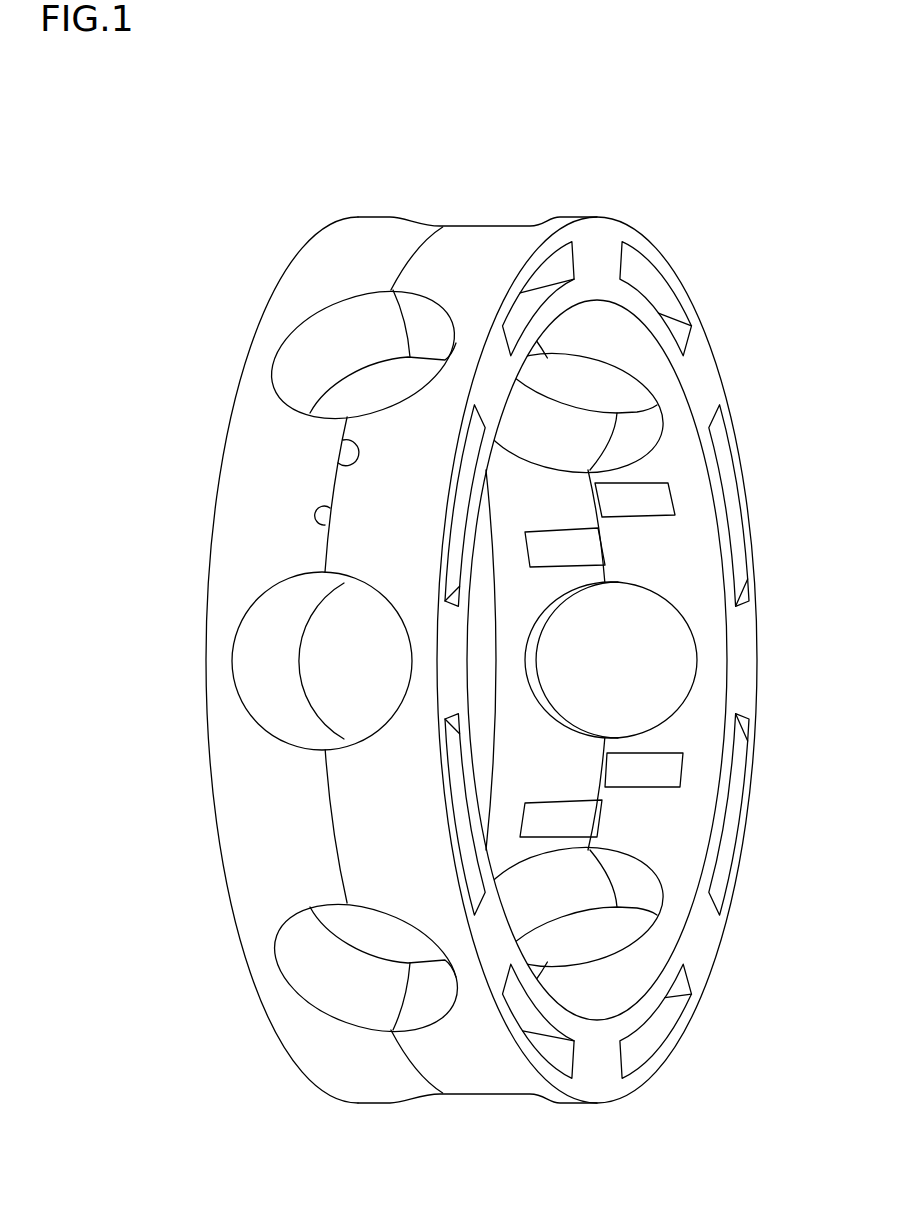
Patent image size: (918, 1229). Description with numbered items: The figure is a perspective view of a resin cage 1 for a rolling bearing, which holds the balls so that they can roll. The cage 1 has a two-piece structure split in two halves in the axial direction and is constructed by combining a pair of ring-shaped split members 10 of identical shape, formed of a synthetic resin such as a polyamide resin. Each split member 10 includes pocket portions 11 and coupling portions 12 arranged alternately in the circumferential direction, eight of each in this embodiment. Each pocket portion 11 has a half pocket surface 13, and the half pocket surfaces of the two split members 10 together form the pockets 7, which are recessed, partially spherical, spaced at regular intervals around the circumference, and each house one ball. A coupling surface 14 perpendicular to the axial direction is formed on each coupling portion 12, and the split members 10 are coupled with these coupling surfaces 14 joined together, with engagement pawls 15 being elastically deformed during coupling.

The cage 1 is at (580, 126).
The pocket 7 is at (321, 344).
The split member 10 is at (374, 216).
The pocket portion 11 is at (256, 370).
The coupling portion 12 is at (237, 500).
The half pocket surface 13 is at (342, 323).
The coupling surface 14 is at (358, 457).
The engagement pawl 15 is at (662, 502).